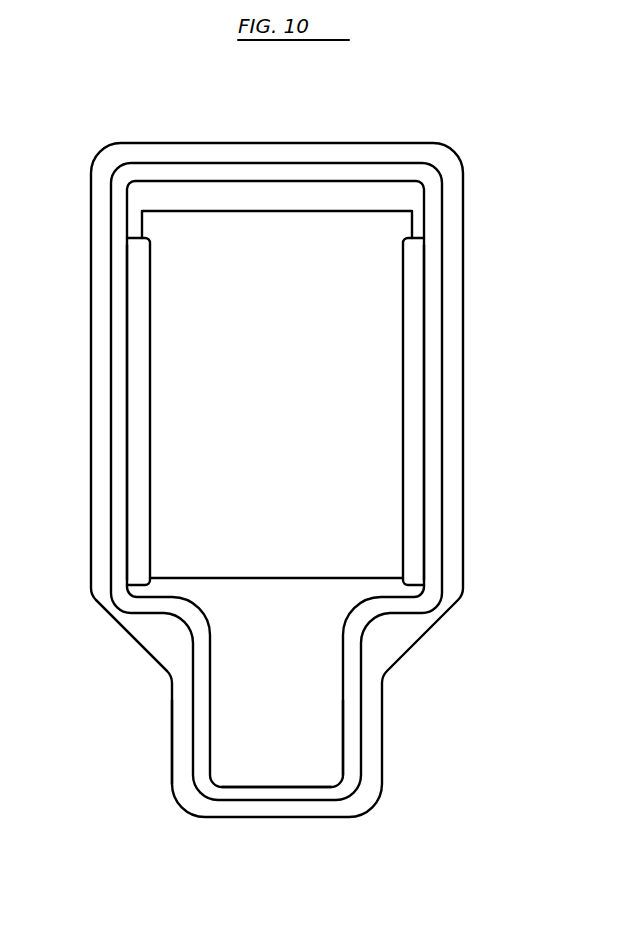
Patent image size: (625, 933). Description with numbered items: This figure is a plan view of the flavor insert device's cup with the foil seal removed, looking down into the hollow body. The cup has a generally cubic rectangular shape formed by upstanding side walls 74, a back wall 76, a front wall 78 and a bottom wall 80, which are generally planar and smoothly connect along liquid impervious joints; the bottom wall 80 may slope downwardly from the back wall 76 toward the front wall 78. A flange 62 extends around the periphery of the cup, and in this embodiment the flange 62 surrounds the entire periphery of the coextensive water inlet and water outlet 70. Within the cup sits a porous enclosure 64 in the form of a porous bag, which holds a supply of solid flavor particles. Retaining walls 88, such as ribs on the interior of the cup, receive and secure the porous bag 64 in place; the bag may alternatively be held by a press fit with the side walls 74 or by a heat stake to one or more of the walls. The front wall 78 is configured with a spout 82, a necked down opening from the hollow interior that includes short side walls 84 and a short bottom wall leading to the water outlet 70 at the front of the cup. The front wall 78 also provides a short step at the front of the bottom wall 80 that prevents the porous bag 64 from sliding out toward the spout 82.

The flange 62 is at (448, 225).
The porous enclosure 64 is at (353, 487).
The water outlet 70 is at (280, 758).
The side walls 74 is at (433, 292).
The back wall 76 is at (245, 173).
The front wall 78 is at (148, 607).
The bottom wall 80 is at (386, 192).
The spout 82 is at (342, 755).
The short side walls 84 is at (200, 743).
The retaining walls 88 is at (413, 352).